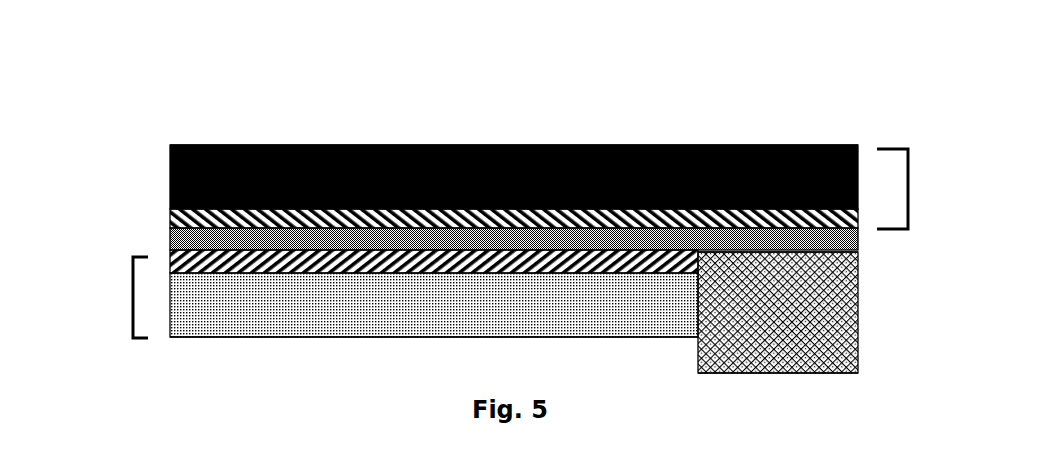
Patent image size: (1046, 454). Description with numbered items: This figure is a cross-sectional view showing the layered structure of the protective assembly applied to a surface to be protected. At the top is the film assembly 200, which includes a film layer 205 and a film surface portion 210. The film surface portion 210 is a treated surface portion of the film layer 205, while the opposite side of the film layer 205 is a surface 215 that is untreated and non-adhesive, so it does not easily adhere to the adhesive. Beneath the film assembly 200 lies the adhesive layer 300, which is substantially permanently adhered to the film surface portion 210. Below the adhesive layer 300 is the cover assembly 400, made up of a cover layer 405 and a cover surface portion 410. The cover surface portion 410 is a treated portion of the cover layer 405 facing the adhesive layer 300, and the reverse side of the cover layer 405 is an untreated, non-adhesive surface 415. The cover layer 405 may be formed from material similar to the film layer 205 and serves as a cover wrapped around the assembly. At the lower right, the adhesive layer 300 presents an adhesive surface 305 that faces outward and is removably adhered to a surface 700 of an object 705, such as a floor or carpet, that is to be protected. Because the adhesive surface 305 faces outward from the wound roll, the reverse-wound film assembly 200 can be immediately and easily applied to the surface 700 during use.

The film assembly 200 is at (920, 189).
The film layer 205 is at (290, 145).
The film surface portion 210 is at (172, 210).
The surface 215 is at (422, 145).
The adhesive layer 300 is at (820, 244).
The adhesive surface 305 is at (747, 253).
The cover assembly 400 is at (115, 297).
The cover layer 405 is at (265, 308).
The cover surface portion 410 is at (170, 260).
The surface 415 is at (315, 338).
The surface 700 is at (820, 253).
The object 705 is at (780, 340).